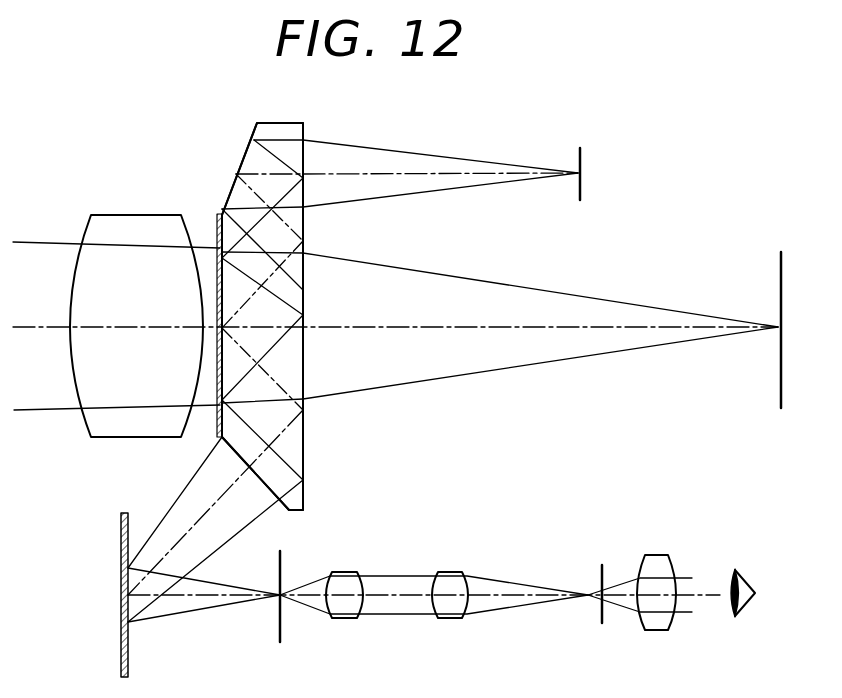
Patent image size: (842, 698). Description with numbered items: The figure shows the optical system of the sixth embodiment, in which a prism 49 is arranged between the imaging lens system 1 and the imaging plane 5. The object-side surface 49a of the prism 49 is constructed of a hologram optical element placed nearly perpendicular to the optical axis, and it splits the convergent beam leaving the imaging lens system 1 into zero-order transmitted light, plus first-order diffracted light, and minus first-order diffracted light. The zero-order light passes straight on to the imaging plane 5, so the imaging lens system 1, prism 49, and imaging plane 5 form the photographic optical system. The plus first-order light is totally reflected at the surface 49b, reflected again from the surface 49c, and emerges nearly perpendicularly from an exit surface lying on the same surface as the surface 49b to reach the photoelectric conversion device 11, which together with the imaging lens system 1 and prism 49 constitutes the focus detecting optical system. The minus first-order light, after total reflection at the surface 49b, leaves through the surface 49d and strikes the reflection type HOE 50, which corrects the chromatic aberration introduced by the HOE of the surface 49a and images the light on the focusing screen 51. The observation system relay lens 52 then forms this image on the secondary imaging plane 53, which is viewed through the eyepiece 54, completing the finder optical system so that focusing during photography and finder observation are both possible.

The imaging lens system 1 is at (112, 215).
The imaging plane 5 is at (783, 270).
The photoelectric conversion device 11 is at (580, 160).
The prism 49 is at (275, 311).
The surface 49a is at (217, 232).
The surface 49b is at (303, 383).
The surface 49c is at (247, 143).
The surface 49d is at (280, 497).
The reflection type HOE 50 is at (120, 540).
The focusing screen 51 is at (278, 622).
The observation system relay lens 52 is at (470, 626).
The secondary imaging plane 53 is at (602, 622).
The eyepiece 54 is at (662, 630).